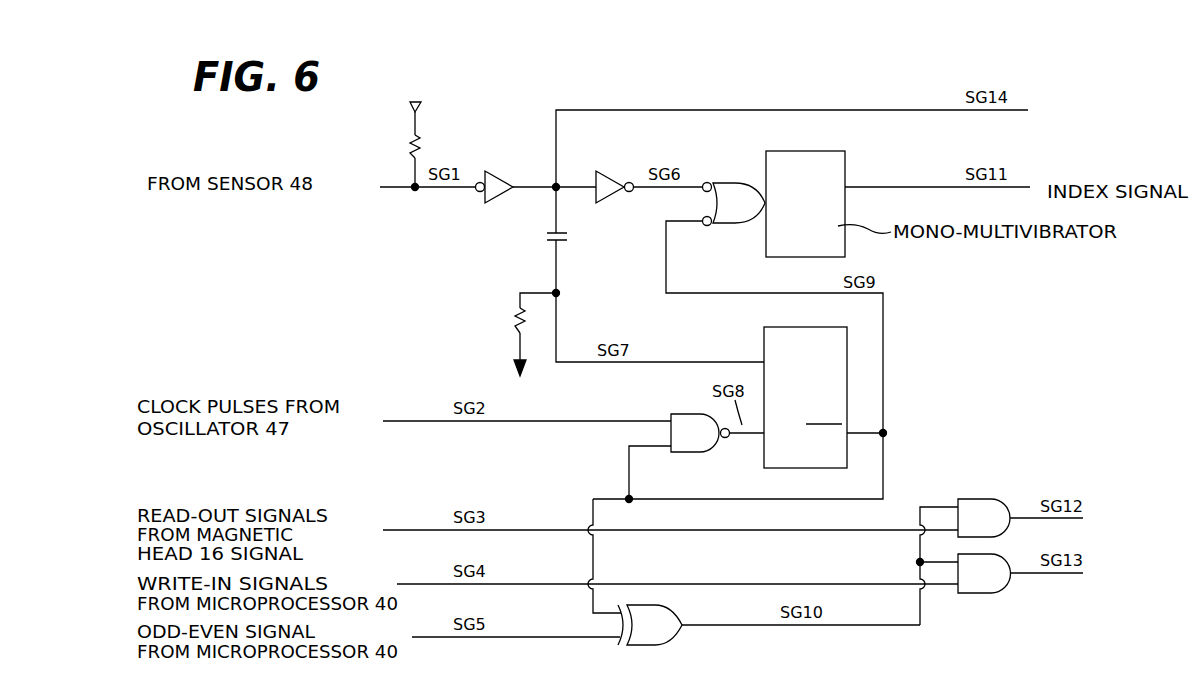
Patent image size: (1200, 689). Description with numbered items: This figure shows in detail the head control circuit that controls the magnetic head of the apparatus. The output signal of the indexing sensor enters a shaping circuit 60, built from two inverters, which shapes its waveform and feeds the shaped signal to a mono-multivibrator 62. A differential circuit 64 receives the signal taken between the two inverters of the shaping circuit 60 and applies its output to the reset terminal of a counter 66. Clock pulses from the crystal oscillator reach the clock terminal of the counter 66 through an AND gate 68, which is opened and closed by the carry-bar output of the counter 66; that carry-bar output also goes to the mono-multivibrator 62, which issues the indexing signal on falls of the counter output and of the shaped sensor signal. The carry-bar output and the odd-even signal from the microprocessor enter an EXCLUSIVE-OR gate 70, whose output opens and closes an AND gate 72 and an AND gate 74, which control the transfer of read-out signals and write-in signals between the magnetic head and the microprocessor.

The shaping circuit 60 is at (534, 168).
The mono-multivibrator 62 is at (838, 161).
The differential circuit 64 is at (570, 282).
The counter 66 is at (776, 332).
The AND gate 68 is at (684, 425).
The EXCLUSIVE-OR gate 70 is at (668, 636).
The AND gate 72 is at (985, 508).
The AND gate 74 is at (985, 585).